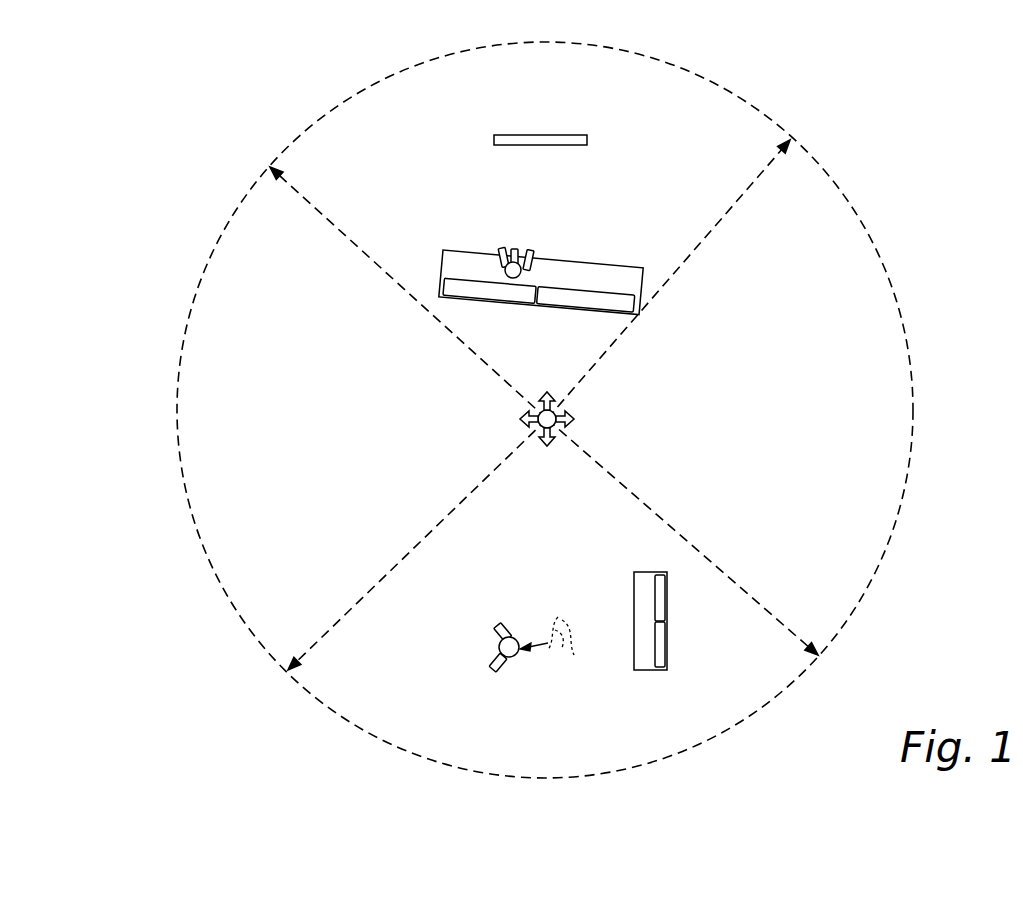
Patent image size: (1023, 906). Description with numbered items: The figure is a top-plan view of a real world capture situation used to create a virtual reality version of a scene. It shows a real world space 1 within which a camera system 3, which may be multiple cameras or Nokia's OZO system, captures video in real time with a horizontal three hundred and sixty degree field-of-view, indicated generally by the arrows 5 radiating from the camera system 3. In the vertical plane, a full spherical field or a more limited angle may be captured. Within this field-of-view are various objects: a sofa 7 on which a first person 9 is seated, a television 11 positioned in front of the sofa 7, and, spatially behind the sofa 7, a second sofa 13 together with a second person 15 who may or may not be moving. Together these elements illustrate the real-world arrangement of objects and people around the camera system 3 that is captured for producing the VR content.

The real world space 1 is at (910, 357).
The camera system 3 is at (552, 419).
The arrows 5 is at (345, 600).
The sofa 7 is at (578, 272).
The first person 9 is at (505, 253).
The television 11 is at (587, 135).
The second sofa 13 is at (640, 596).
The second person 15 is at (500, 638).